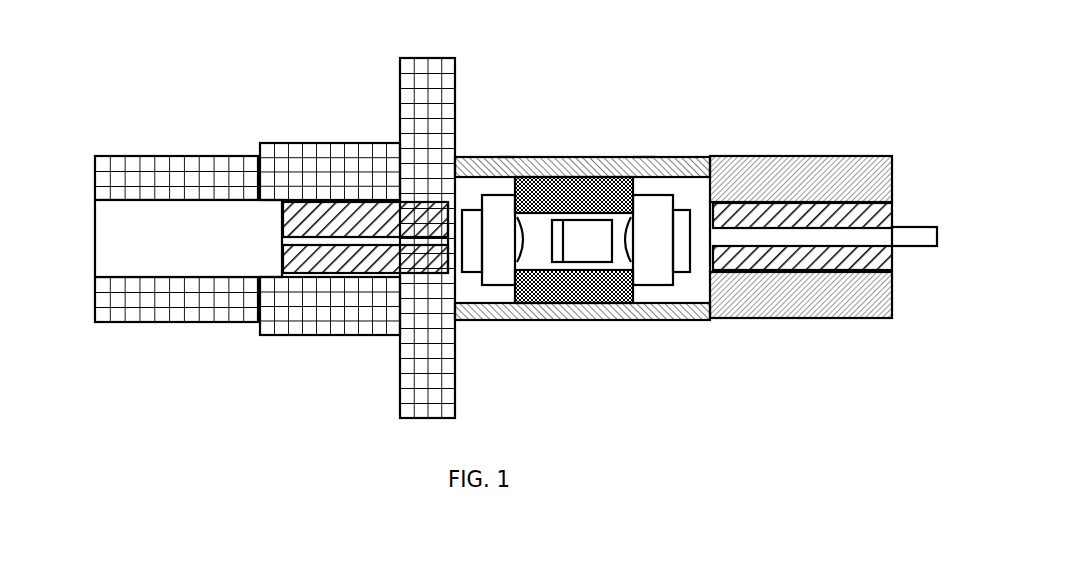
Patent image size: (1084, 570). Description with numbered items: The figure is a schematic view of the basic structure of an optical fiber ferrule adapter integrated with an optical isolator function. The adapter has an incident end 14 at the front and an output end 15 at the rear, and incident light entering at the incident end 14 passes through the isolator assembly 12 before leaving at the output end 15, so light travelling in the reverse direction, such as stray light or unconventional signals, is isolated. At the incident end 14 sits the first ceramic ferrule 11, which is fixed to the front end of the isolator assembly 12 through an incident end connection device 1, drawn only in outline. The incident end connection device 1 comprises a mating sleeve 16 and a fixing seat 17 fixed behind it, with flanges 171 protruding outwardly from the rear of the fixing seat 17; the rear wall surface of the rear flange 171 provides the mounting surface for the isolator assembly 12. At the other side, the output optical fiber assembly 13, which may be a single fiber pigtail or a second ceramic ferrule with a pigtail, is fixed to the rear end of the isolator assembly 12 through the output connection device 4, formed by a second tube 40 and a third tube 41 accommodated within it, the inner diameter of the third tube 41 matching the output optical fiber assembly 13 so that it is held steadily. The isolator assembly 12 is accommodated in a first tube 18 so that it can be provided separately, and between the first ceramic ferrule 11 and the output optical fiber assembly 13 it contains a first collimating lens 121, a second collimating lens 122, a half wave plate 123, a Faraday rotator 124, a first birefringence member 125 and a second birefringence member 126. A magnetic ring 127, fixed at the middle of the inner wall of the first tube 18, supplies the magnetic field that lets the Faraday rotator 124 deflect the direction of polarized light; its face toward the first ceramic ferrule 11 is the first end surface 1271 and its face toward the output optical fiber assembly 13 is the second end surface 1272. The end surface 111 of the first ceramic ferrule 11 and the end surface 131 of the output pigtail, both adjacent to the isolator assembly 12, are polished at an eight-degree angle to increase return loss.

The incident end connection device 1 is at (265, 118).
The first ceramic ferrule 11 is at (283, 202).
The end surface 111 is at (450, 205).
The isolator assembly 12 is at (603, 46).
The first collimating lens 121 is at (498, 285).
The second collimating lens 122 is at (652, 320).
The half wave plate 123 is at (550, 303).
The Faraday rotator 124 is at (595, 303).
The first birefringence member 125 is at (472, 200).
The second birefringence member 126 is at (688, 203).
The magnetic ring 127 is at (558, 157).
The first end surface 1271 is at (508, 157).
The second end surface 1272 is at (645, 157).
The output optical fiber assembly 13 is at (916, 247).
The end surface 131 is at (703, 320).
The incident end 14 is at (76, 165).
The output end 15 is at (921, 148).
The mating sleeve 16 is at (125, 156).
The fixing seat 17 is at (355, 143).
The flange 171 is at (430, 58).
The first tube 18 is at (527, 320).
The output connection device 4 is at (826, 130).
The second tube 40 is at (752, 156).
The third tube 41 is at (892, 212).